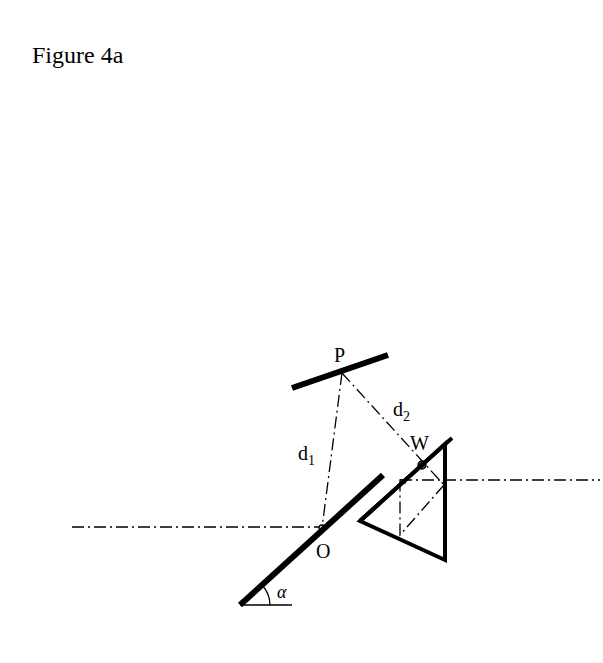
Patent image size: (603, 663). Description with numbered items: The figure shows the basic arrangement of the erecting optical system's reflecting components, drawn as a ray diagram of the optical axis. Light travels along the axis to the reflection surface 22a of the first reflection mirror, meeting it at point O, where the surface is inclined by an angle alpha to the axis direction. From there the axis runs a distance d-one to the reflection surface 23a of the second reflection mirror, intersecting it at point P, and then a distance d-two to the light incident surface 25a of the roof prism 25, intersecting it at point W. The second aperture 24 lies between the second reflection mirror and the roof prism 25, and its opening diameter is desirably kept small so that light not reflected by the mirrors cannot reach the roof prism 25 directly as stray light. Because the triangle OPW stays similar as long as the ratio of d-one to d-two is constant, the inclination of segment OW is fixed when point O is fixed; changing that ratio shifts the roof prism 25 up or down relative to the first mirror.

The reflection surface 22a is at (240, 600).
The reflection surface 23a is at (312, 378).
The second aperture 24 is at (448, 438).
The roof prism 25 is at (428, 548).
The light incident surface 25a is at (362, 516).